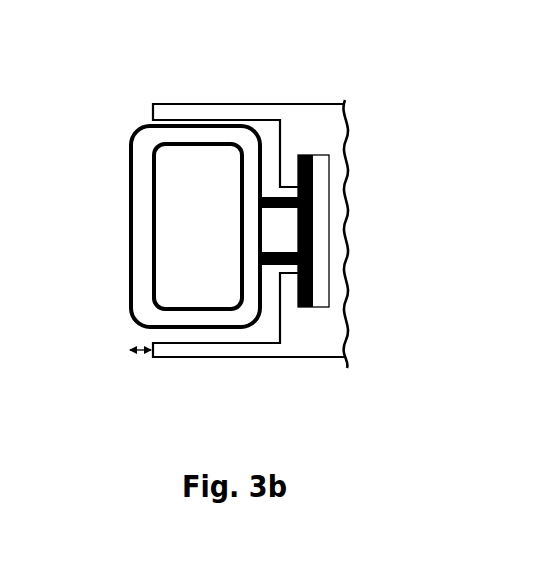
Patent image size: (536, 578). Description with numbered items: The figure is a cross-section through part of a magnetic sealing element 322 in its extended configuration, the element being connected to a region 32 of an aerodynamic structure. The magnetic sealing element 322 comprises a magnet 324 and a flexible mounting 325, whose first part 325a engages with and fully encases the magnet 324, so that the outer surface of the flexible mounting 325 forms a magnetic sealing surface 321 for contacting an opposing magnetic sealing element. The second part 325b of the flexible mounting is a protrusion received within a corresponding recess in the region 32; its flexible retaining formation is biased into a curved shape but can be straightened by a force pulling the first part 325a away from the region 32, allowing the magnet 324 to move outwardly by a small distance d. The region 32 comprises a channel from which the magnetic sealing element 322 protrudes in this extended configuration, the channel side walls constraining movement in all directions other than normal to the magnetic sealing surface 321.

The region of an aerodynamic structure 32 is at (303, 127).
The magnetic sealing element 322 is at (239, 240).
The flexible mounting 325 is at (239, 201).
The magnetic sealing surface 321 is at (148, 223).
The magnet 324 is at (190, 192).
The first part of the flexible mounting 325a is at (136, 226).
The second part of the flexible mounting 325b is at (317, 215).
The distance d is at (140, 358).